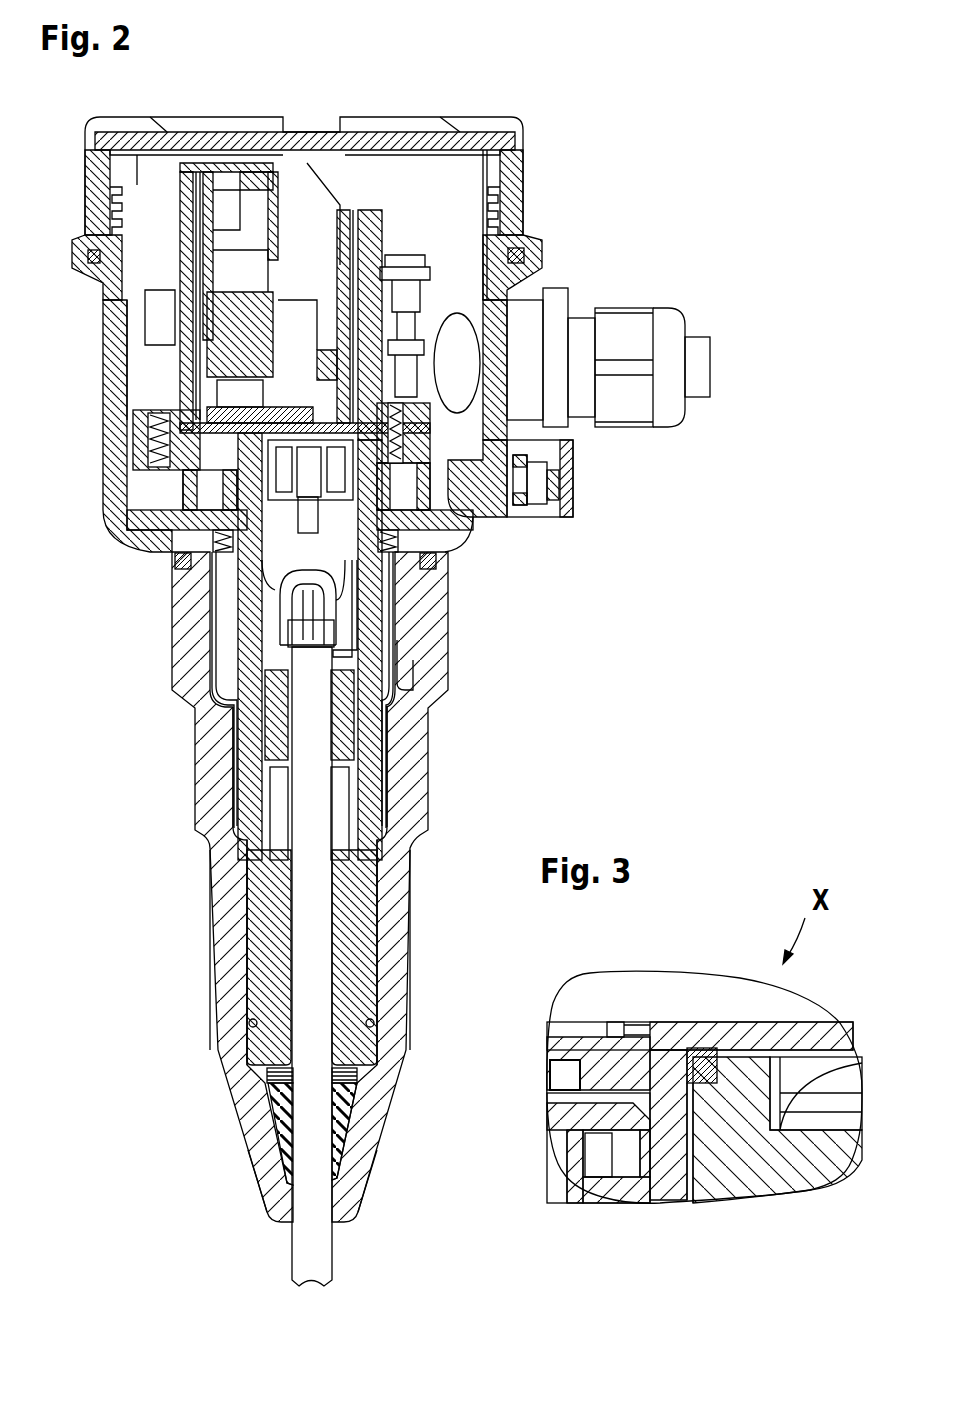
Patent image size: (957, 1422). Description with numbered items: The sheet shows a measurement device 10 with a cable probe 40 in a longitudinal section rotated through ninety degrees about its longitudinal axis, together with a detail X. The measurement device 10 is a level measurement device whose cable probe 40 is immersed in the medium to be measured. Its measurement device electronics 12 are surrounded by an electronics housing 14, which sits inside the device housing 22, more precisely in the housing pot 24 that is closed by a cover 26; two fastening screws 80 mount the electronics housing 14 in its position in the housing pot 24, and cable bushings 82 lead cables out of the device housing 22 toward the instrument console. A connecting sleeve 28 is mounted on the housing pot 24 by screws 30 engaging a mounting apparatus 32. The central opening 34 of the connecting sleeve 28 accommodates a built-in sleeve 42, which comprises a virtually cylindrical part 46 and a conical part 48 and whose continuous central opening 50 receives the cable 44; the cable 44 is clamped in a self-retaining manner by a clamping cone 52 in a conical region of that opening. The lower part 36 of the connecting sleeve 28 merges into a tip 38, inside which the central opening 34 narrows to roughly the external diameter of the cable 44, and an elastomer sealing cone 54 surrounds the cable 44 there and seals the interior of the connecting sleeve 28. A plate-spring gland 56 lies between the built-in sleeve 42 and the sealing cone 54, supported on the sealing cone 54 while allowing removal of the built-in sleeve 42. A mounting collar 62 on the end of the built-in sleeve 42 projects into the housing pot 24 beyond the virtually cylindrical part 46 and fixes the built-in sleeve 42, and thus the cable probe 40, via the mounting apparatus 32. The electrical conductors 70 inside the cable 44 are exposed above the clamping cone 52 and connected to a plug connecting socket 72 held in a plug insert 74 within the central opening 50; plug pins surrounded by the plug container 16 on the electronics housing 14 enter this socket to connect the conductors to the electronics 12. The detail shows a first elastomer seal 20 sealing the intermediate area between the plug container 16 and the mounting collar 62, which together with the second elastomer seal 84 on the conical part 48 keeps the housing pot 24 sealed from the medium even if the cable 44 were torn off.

In FIG. 2, the measurement device 10 is at (432, 92).
In FIG. 2, the measurement device electronics 12 is at (304, 187).
In FIG. 2, the electronics housing 14 is at (183, 300).
In FIG. 3, the electronics housing 14 is at (670, 1053).
In FIG. 2, the plug container 16 is at (430, 540).
In FIG. 3, the plug container 16 is at (667, 1180).
In FIG. 3, the first elastomer seal 20 is at (713, 1047).
In FIG. 2, the device housing 22 is at (493, 240).
In FIG. 2, the housing pot 24 is at (117, 362).
In FIG. 2, the cover 26 is at (88, 165).
In FIG. 2, the connecting sleeve 28 is at (195, 826).
In FIG. 2, the screws 30 is at (210, 540).
In FIG. 2, the mounting apparatus 32 is at (170, 520).
In FIG. 2, the central opening 34 is at (212, 590).
In FIG. 2, the lower part 36 is at (230, 957).
In FIG. 2, the tip 38 is at (263, 1165).
In FIG. 2, the cable probe 40 is at (240, 727).
In FIG. 2, the built-in sleeve 42 is at (257, 780).
In FIG. 2, the cable 44 is at (313, 1255).
In FIG. 2, the virtually cylindrical part 46 is at (255, 641).
In FIG. 2, the conical part 48 is at (260, 923).
In FIG. 2, the central opening 50 is at (262, 582).
In FIG. 2, the clamping cone 52 is at (277, 707).
In FIG. 2, the sealing cone 54 is at (280, 1130).
In FIG. 2, the plate-spring gland 56 is at (347, 1077).
In FIG. 2, the mounting collar 62 is at (488, 420).
In FIG. 3, the mounting collar 62 is at (750, 1160).
In FIG. 2, the electrical conductors 70 is at (372, 600).
In FIG. 2, the plug connecting socket 72 is at (340, 590).
In FIG. 3, the plug connecting socket 72 is at (573, 1170).
In FIG. 2, the plug insert 74 is at (280, 513).
In FIG. 2, the fastening screws 80 is at (143, 428).
In FIG. 2, the cable bushings 82 is at (580, 335).
In FIG. 2, the second elastomer seal 84 is at (250, 1025).